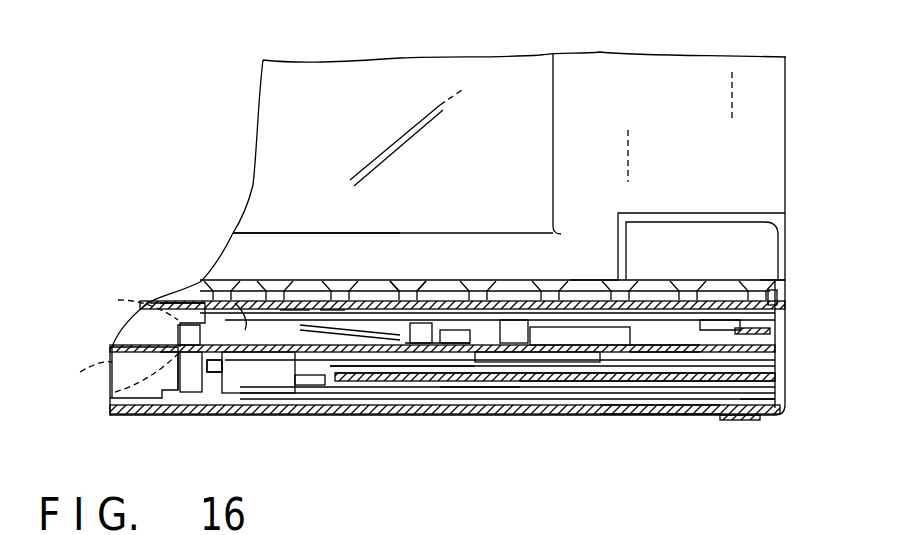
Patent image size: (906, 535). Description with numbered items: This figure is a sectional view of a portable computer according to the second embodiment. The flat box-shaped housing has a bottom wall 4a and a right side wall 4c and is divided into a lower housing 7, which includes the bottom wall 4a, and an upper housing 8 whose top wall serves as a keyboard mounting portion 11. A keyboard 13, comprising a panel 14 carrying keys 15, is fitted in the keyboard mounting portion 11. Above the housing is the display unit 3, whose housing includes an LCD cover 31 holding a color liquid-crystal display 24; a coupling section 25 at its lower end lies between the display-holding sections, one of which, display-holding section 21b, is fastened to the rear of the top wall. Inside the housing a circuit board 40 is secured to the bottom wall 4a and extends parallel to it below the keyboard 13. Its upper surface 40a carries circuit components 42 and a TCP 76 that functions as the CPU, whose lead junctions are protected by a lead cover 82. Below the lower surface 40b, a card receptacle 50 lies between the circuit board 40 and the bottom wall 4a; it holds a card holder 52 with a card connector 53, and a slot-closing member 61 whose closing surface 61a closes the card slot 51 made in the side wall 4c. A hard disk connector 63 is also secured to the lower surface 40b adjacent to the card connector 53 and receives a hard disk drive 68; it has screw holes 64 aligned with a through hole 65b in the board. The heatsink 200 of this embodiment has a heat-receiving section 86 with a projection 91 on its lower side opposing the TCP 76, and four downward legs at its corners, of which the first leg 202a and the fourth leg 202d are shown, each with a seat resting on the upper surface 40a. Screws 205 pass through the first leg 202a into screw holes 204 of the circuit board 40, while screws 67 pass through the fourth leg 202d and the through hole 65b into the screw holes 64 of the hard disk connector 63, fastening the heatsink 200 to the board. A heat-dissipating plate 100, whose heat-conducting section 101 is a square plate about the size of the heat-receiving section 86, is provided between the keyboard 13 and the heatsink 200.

The display unit 3 is at (616, 65).
The color liquid-crystal display 24 is at (393, 70).
The LCD cover 31 is at (714, 68).
The display-holding section 21b is at (700, 232).
The coupling section 25 is at (261, 240).
The heat-dissipating plate 100 is at (358, 325).
The heatsink 200 is at (448, 330).
The keyboard 13 is at (597, 266).
The heat-receiving section 86 is at (235, 303).
The screws 67 is at (185, 305).
The projection 91 is at (290, 312).
The heat-conducting section 101 is at (325, 312).
The keys 15 is at (420, 283).
The screws 205 is at (460, 320).
The first leg 202a is at (520, 320).
The circuit components 42 is at (648, 330).
The upper surface 40a is at (712, 330).
The keyboard mounting portion 11 is at (768, 280).
The upper housing 8 is at (785, 297).
The side wall 4c is at (788, 331).
The closing surface 61a is at (788, 376).
The card slot 51 is at (788, 400).
The fourth leg 202d is at (175, 322).
The hard disk drive 68 is at (114, 368).
The through hole 65b is at (112, 384).
The hard disk connector 63 is at (160, 365).
The screw holes 64 is at (190, 365).
The lower surface 40b is at (222, 390).
The card connector 53 is at (272, 393).
The TCP 76 is at (310, 386).
The card holder 52 is at (350, 366).
The lead cover 82 is at (410, 345).
The screw holes 204 is at (455, 388).
The card receptacle 50 is at (514, 380).
The circuit board 40 is at (558, 362).
The slot-closing member 61 is at (606, 382).
The panel 14 is at (644, 353).
The bottom wall 4a is at (690, 414).
The lower housing 7 is at (762, 420).